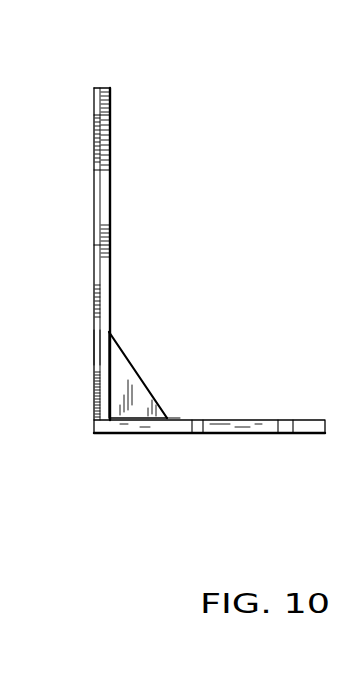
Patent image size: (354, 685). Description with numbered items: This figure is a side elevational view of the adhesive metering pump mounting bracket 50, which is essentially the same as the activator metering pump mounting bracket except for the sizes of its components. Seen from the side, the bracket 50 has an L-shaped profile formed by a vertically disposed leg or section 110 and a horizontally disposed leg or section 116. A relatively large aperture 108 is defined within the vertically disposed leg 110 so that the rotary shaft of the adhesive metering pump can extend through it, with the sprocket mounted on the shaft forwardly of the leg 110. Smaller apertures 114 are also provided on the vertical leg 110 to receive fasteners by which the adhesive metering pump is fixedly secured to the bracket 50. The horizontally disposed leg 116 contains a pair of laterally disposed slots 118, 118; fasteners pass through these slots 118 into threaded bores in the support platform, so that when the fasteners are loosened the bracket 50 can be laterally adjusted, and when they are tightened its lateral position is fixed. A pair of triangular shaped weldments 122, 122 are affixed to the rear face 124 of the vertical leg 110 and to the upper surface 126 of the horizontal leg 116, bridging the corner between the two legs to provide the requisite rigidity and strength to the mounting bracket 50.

The adhesive metering pump mounting bracket 50 is at (209, 224).
The aperture 108 is at (105, 212).
The vertically disposed leg or section 110 is at (102, 348).
The apertures 114 is at (100, 140).
The horizontally disposed leg or section 116 is at (247, 420).
The laterally disposed slots 118 is at (193, 433).
The triangular shaped weldments 122 is at (95, 401).
The rear face 124 is at (110, 332).
The upper surface 126 is at (178, 419).